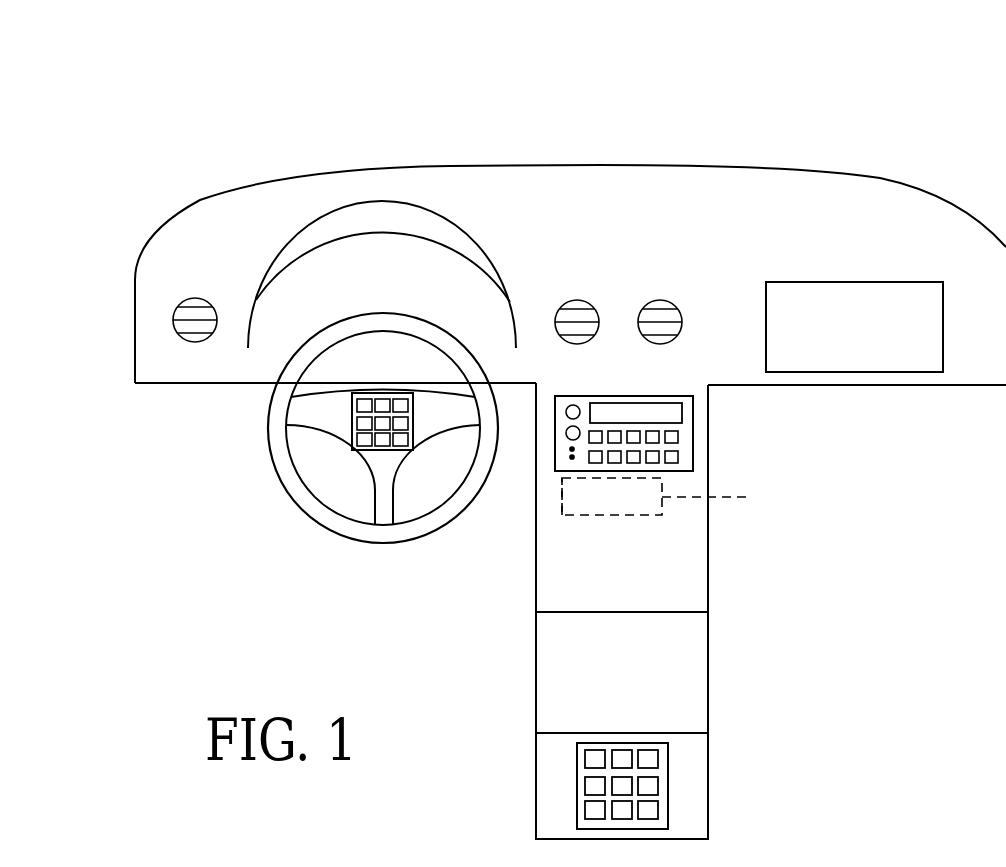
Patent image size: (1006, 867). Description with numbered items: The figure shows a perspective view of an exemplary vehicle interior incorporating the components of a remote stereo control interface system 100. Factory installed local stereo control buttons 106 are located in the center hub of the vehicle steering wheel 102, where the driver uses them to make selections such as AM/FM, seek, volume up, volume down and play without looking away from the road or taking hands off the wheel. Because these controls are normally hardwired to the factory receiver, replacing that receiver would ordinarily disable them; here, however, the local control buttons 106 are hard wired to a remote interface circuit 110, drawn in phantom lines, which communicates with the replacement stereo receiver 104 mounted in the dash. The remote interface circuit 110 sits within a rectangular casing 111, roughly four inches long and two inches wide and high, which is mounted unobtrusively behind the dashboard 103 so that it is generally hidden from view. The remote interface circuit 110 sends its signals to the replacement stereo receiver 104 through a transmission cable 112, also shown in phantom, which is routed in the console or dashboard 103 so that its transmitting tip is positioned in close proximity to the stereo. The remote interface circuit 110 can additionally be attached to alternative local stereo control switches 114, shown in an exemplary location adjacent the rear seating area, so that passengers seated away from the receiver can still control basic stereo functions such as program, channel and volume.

The remote stereo control interface system 100 is at (570, 432).
The vehicle steering wheel 102 is at (283, 424).
The dashboard 103 is at (332, 190).
The replacement stereo receiver 104 is at (685, 430).
The local stereo control buttons 106 is at (403, 436).
The remote interface circuit 110 is at (637, 505).
The casing 111 is at (562, 515).
The transmission cable 112 is at (725, 497).
The alternative local stereo control switches 114 is at (643, 747).